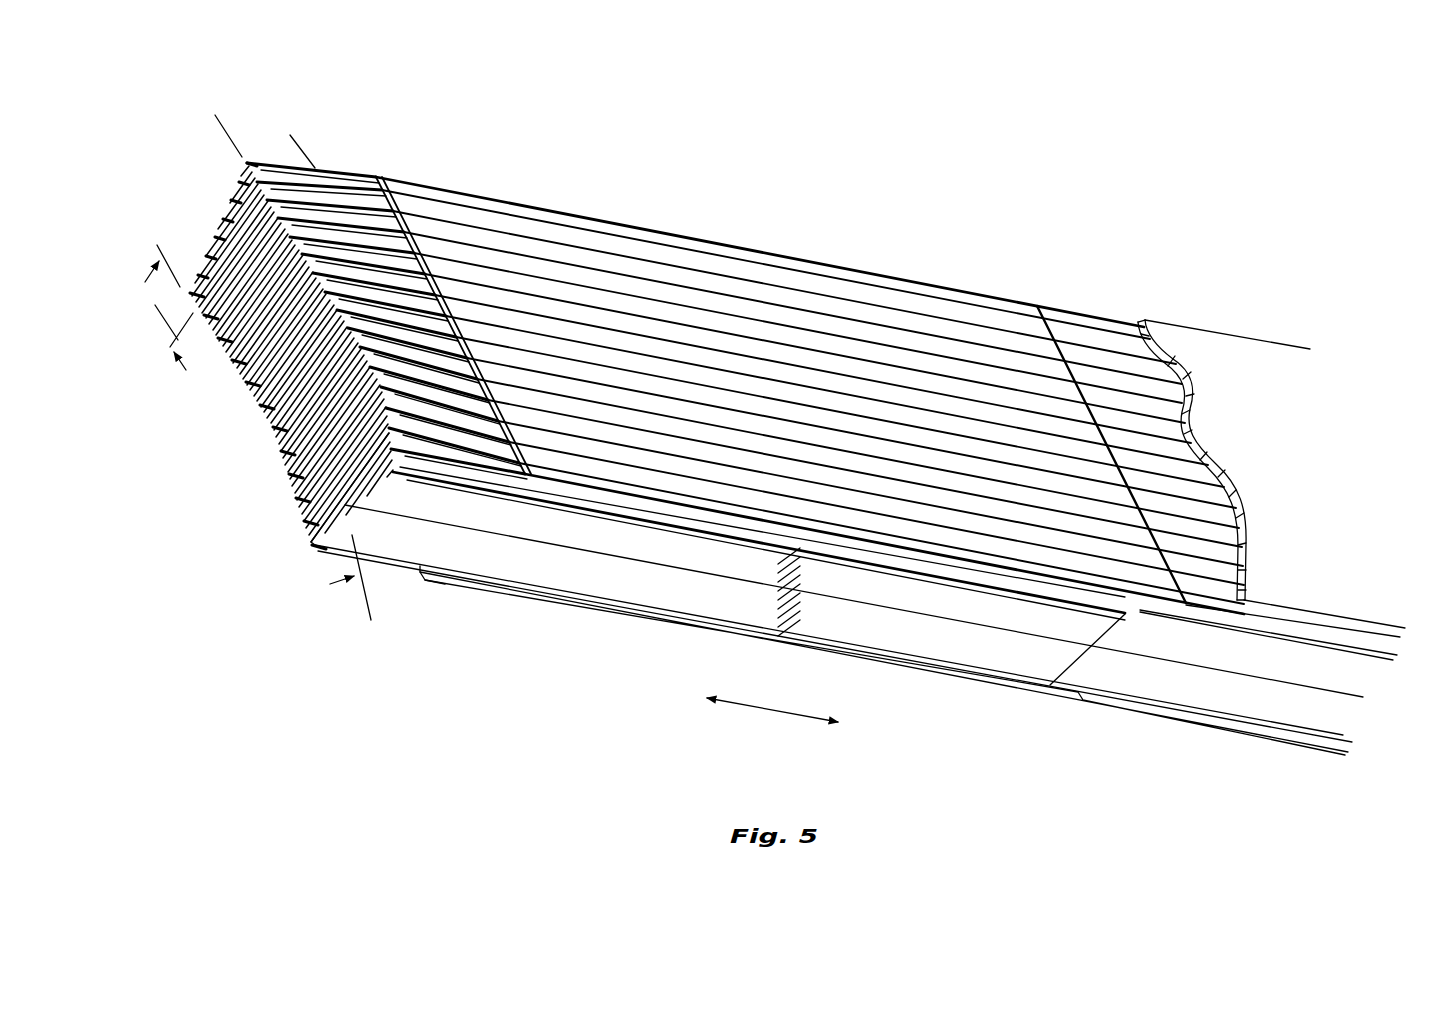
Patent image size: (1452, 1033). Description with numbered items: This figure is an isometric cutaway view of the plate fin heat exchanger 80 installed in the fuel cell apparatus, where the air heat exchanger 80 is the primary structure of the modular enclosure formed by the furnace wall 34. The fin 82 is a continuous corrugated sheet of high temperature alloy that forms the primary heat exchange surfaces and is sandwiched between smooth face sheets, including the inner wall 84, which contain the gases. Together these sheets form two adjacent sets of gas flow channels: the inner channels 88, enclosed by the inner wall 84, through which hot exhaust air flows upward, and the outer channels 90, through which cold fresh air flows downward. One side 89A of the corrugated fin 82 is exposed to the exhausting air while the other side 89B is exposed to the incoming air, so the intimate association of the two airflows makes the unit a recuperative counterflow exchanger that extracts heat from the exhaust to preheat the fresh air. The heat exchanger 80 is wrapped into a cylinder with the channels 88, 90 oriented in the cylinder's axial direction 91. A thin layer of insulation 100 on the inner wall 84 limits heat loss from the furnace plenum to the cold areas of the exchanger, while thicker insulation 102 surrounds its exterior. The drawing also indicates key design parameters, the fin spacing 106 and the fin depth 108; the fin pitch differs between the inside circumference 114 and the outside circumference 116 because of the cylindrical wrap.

The furnace wall 34 is at (653, 643).
The heat exchanger 80 is at (824, 222).
The fin 82 is at (352, 540).
The inner wall 84 is at (447, 582).
The inner channels 88 is at (323, 526).
The one side of the corrugated metal fin 89A is at (283, 275).
The other side of the corrugated metal fin 89B is at (258, 196).
The outer channels 90 is at (313, 545).
The axial direction 91 is at (806, 725).
The insulation 100 is at (533, 598).
The insulation 102 is at (1222, 364).
The fin spacing 106 is at (152, 322).
The fin depth 108 is at (230, 118).
The inside circumference 114 is at (352, 576).
The outside circumference 116 is at (296, 148).